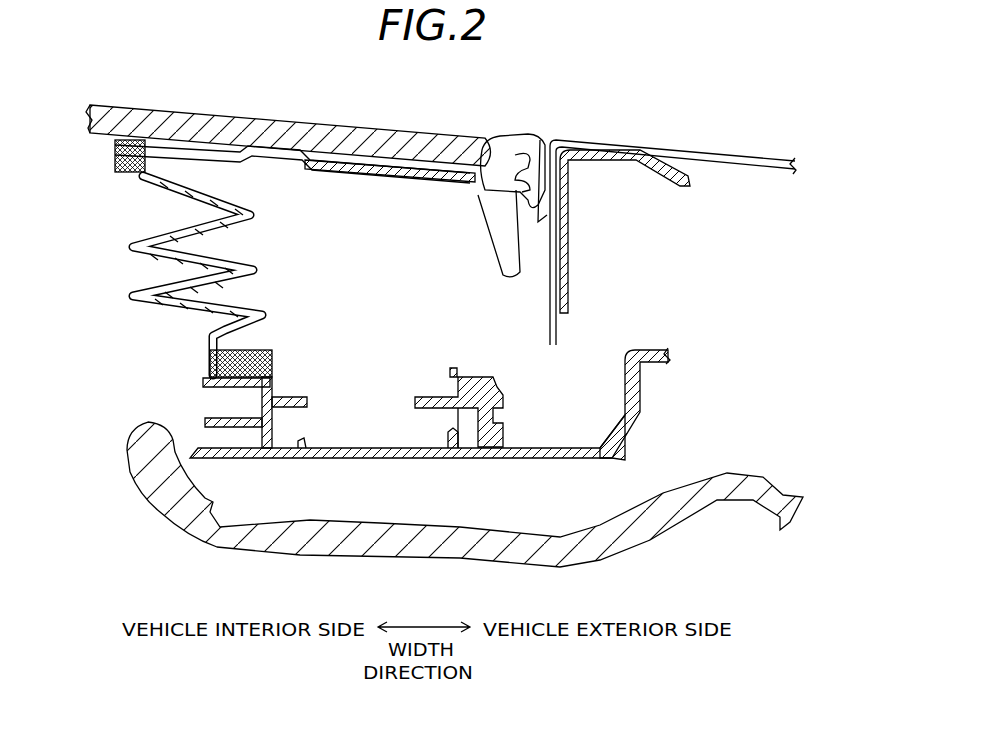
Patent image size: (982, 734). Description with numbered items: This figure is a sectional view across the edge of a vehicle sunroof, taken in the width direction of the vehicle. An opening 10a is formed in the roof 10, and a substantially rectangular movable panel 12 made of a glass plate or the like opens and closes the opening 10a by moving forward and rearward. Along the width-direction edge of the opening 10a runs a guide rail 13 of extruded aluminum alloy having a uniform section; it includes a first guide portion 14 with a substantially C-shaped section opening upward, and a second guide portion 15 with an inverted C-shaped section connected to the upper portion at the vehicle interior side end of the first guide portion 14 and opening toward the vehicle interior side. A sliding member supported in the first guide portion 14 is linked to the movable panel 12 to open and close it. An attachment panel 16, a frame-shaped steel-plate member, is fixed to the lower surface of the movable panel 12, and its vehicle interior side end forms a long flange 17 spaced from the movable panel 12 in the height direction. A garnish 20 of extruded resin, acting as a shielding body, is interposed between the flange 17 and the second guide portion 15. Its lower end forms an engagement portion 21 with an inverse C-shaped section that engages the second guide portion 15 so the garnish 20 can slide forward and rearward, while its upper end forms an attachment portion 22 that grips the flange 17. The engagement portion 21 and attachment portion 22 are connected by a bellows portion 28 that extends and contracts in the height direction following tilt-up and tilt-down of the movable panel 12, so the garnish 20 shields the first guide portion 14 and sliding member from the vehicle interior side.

The roof 10 is at (697, 155).
The opening 10a is at (545, 165).
The movable panel 12 is at (211, 124).
The guide rail 13 is at (638, 392).
The first guide portion 14 is at (372, 448).
The second guide portion 15 is at (232, 385).
The attachment panel 16 is at (353, 182).
The flange 17 is at (226, 168).
The garnish 20 is at (164, 278).
The engagement portion 21 is at (210, 358).
The attachment portion 22 is at (113, 152).
The bellows portion 28 is at (150, 264).